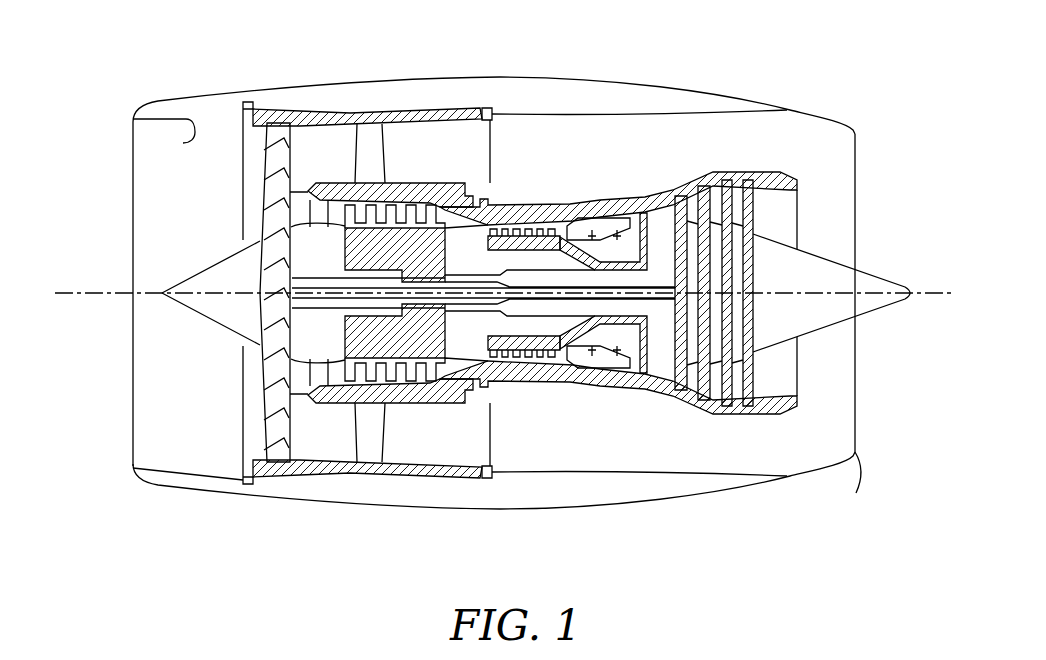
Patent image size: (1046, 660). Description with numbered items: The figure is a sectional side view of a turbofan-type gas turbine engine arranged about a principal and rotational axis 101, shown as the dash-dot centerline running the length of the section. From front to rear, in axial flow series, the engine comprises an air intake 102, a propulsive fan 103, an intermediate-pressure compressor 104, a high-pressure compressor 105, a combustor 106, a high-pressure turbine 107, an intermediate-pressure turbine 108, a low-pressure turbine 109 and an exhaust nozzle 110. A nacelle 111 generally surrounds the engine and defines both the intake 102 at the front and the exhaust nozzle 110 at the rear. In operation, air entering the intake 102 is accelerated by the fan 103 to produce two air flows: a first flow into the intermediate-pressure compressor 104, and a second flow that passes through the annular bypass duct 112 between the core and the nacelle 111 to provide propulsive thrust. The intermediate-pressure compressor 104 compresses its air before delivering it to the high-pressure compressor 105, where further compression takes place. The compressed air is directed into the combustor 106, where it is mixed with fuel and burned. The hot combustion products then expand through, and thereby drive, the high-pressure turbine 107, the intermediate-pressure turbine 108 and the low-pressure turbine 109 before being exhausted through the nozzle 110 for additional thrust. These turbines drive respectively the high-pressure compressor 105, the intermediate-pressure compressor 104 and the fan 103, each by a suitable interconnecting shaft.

The principal and rotational axis 101 is at (108, 97).
The air intake 102 is at (183, 143).
The propulsive fan 103 is at (262, 383).
The intermediate-pressure compressor 104 is at (392, 380).
The high-pressure compressor 105 is at (527, 243).
The combustor 106 is at (585, 360).
The high-pressure turbine 107 is at (640, 363).
The intermediate-pressure turbine 108 is at (682, 383).
The low-pressure turbine 109 is at (705, 387).
The exhaust nozzle 110 is at (858, 476).
The nacelle 111 is at (700, 97).
The bypass duct 112 is at (450, 162).